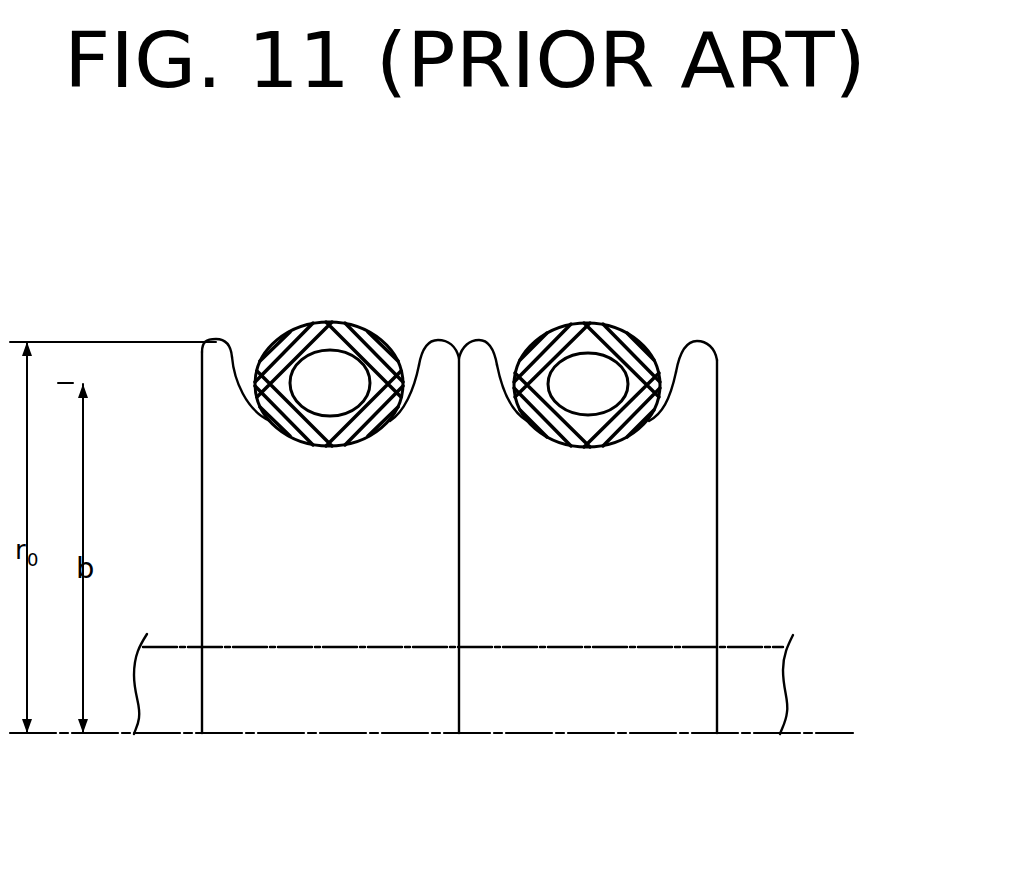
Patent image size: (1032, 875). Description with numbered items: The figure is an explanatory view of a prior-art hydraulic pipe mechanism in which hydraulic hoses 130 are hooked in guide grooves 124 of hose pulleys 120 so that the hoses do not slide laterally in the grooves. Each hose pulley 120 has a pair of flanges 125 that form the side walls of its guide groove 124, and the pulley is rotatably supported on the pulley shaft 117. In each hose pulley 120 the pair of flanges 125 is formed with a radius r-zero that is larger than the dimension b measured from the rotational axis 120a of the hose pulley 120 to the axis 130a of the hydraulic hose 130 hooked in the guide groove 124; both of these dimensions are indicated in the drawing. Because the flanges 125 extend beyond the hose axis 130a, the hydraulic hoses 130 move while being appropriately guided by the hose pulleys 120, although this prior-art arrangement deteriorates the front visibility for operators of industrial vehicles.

The pulley shaft 117 is at (757, 682).
The hose pulley 120 is at (200, 514).
The rotational axis of the hose pulley 120a is at (478, 735).
The guide groove 124 is at (412, 385).
The flange 125 is at (230, 343).
The hydraulic hose 130 is at (300, 329).
The axis of the hydraulic hose 130a is at (330, 382).